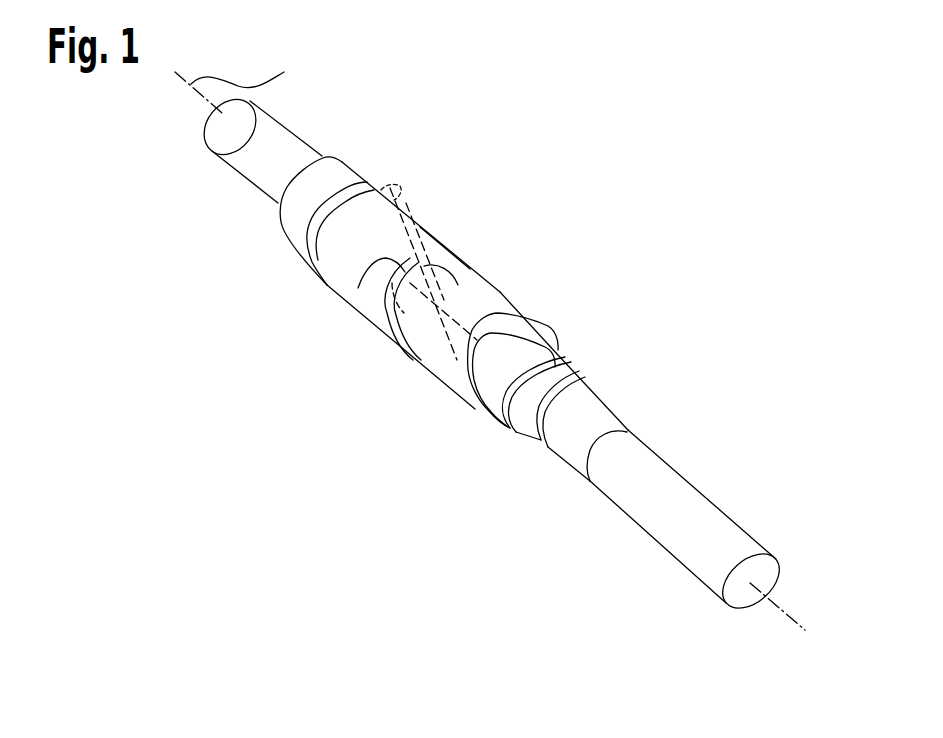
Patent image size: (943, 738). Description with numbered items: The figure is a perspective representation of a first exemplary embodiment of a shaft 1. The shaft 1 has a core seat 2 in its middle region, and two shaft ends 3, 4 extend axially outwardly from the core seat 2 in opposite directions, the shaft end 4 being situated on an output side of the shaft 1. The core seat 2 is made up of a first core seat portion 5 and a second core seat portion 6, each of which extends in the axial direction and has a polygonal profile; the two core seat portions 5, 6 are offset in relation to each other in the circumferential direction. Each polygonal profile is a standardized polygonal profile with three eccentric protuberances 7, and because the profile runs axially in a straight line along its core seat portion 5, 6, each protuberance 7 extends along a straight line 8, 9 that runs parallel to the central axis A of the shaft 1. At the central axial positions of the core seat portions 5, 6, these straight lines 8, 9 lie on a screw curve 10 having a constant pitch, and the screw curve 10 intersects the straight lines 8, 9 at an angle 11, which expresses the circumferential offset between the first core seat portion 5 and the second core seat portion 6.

The shaft 1 is at (662, 153).
The core seat 2 is at (257, 340).
The shaft end 3 is at (129, 222).
The shaft end 4 is at (418, 480).
The first core seat portion 5 is at (417, 212).
The second core seat portion 6 is at (498, 282).
The eccentric protuberance 7 is at (443, 233).
The straight line 8 is at (385, 192).
The straight line 9 is at (527, 331).
The screw curve 10 is at (450, 334).
The angle 11 is at (355, 302).